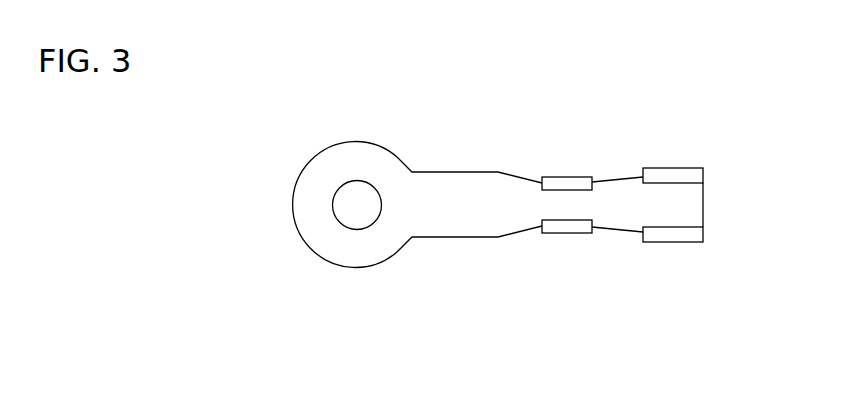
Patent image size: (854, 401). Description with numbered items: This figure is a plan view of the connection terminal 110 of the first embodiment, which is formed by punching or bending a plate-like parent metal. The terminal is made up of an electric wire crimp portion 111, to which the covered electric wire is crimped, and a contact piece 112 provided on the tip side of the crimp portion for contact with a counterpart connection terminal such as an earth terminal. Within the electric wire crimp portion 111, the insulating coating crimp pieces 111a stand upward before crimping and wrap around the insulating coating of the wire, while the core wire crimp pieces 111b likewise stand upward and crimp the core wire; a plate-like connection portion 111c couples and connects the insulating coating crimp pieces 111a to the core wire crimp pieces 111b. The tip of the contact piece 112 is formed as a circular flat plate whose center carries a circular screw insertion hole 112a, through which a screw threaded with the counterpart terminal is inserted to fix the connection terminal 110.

The connection terminal 110 is at (498, 241).
The electric wire crimp portion 111 is at (550, 254).
The insulating coating crimp pieces 111a is at (673, 243).
The core wire crimp pieces 111b is at (568, 228).
The plate-like connection portion 111c is at (612, 212).
The contact piece 112 is at (395, 224).
The screw insertion hole 112a is at (333, 204).